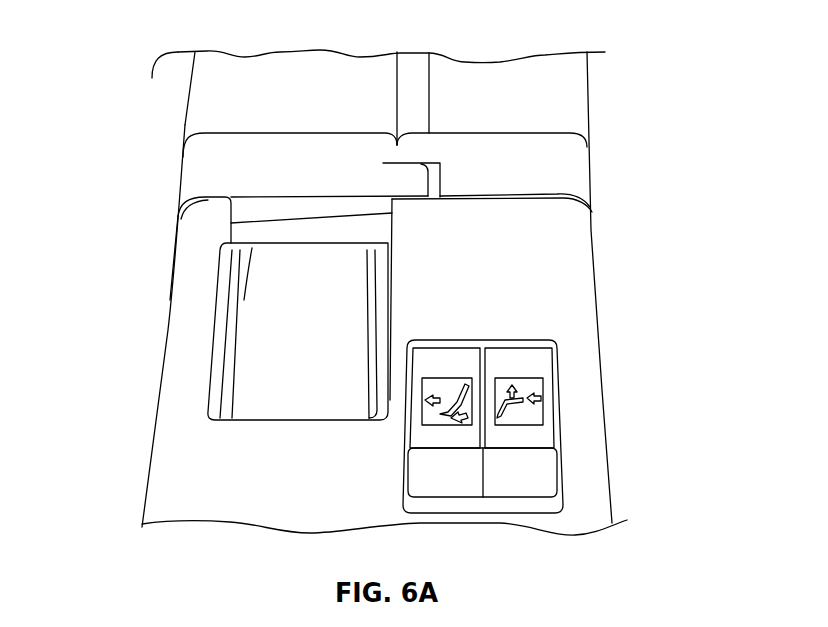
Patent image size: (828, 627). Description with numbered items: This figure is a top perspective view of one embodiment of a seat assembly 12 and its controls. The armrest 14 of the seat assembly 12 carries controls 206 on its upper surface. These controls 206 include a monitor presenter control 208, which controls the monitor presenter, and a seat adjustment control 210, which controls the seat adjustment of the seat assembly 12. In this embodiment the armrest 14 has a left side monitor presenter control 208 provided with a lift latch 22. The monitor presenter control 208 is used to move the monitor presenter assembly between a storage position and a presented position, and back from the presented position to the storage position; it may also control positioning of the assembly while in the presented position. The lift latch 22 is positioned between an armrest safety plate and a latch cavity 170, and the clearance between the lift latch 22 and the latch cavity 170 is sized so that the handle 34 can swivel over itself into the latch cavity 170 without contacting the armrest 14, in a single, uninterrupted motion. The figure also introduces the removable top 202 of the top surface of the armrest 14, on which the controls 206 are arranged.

The seat assembly 12 is at (658, 92).
The armrest 14 is at (452, 188).
The lift latch 22 is at (277, 303).
The handle 34 is at (250, 243).
The latch cavity 170 is at (257, 395).
The removable top 202 is at (197, 103).
The controls 206 is at (635, 332).
The monitor presenter control 208 is at (198, 325).
The seat adjustment control 210 is at (483, 348).